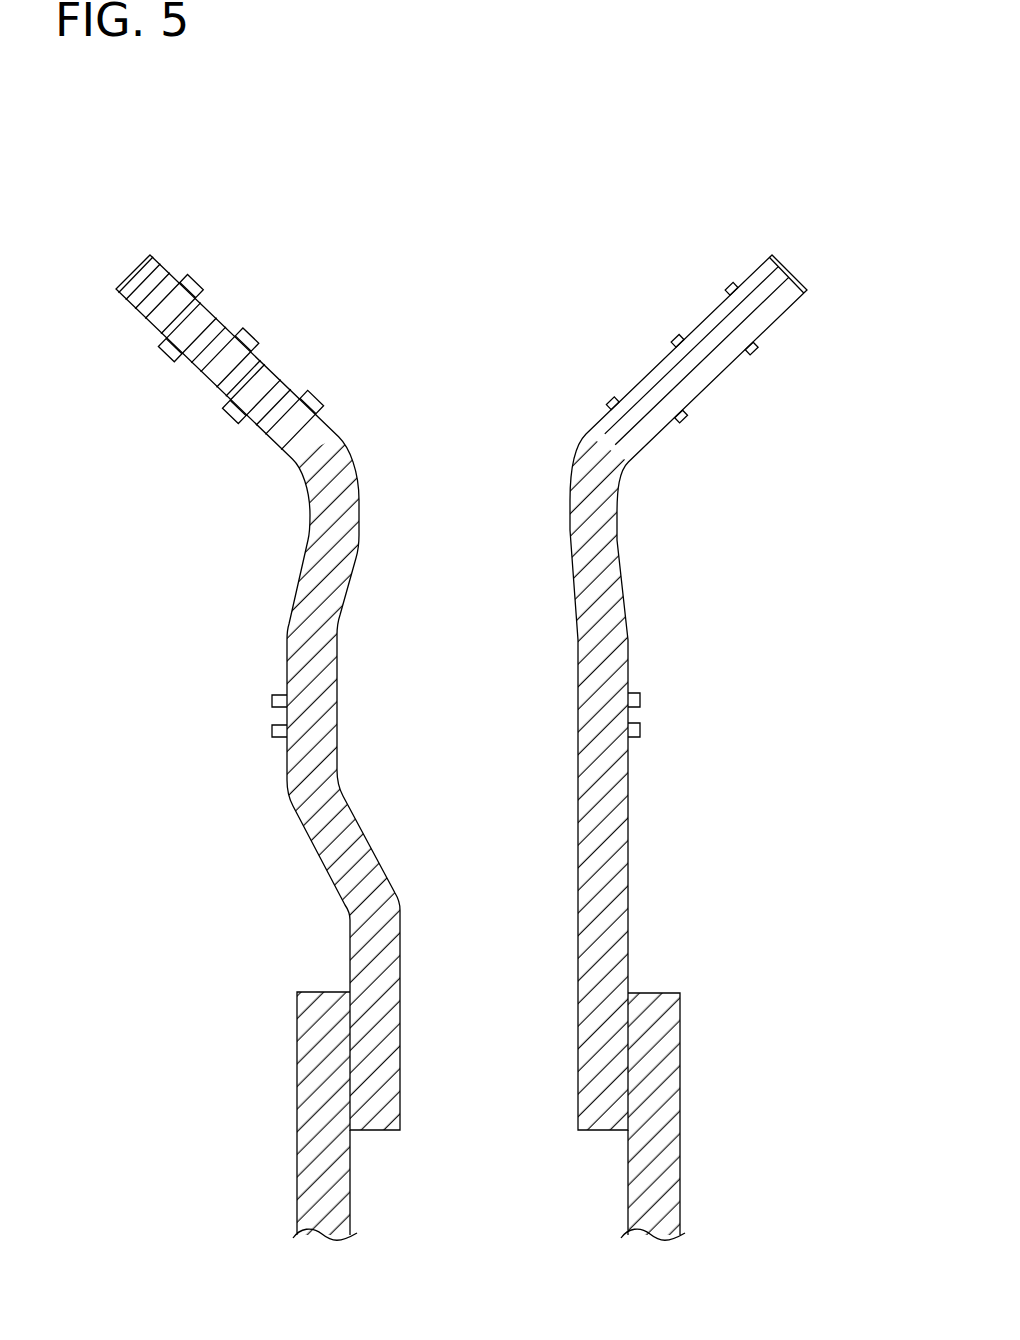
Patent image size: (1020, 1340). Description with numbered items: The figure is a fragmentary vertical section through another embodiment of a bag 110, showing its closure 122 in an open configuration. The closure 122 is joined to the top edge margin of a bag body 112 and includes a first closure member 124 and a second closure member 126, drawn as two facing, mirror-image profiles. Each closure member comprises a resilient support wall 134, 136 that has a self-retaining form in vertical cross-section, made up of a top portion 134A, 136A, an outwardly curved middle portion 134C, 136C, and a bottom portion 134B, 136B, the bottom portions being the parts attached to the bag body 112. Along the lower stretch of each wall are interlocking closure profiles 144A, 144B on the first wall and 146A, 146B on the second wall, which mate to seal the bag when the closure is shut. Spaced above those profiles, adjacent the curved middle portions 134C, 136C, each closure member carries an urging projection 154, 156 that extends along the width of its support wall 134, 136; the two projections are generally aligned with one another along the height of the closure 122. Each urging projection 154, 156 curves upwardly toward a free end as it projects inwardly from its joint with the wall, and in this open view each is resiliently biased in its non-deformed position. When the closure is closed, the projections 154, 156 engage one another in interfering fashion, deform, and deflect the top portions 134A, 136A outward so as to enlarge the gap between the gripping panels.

The bag 110 is at (143, 1188).
The bag body 112 is at (682, 1150).
The closure 122 is at (598, 207).
The first closure member 124 is at (385, 400).
The second closure member 126 is at (538, 425).
The support wall 134 is at (287, 796).
The top portion 134A is at (103, 255).
The bottom portion 134B is at (113, 636).
The middle portion 134C is at (148, 462).
The support wall 136 is at (620, 527).
The top portion 136A is at (828, 255).
The bottom portion 136B is at (810, 636).
The middle portion 136C is at (773, 462).
The interlocking closure profile 144A is at (337, 663).
The interlocking closure profile 144B is at (337, 748).
The interlocking closure profile 146A is at (562, 675).
The interlocking closure profile 146B is at (581, 771).
The urging projection 154 is at (357, 556).
The urging projection 156 is at (571, 556).